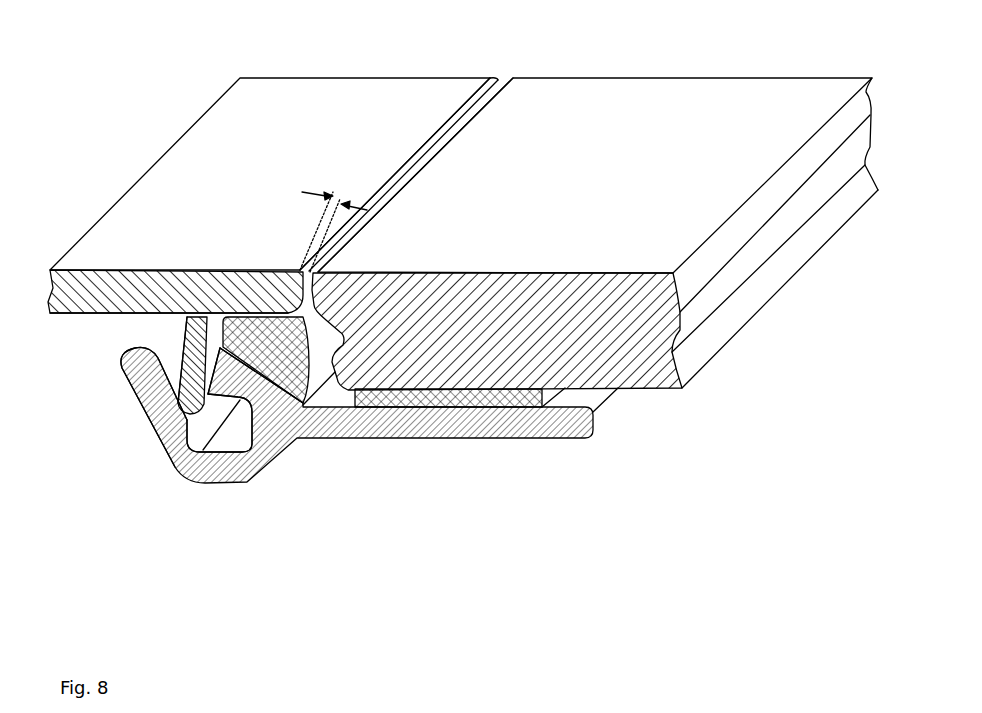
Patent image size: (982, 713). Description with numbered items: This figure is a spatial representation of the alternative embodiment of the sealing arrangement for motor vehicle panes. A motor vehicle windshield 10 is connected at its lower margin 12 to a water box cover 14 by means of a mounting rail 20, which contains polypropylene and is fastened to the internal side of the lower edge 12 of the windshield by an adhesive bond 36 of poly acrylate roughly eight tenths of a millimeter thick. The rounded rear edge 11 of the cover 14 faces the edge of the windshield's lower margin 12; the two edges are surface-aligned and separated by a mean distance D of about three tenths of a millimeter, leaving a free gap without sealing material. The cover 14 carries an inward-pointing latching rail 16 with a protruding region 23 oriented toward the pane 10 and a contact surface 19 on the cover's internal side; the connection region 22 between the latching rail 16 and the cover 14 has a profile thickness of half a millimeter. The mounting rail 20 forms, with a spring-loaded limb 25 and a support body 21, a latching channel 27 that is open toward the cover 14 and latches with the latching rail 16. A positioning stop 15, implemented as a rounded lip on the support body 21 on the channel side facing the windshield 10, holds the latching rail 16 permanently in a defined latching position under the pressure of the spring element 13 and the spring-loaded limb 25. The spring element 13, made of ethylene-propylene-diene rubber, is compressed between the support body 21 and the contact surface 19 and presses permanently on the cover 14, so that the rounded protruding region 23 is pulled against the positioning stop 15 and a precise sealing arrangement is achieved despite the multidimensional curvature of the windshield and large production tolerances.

The motor vehicle windshield 10 is at (587, 140).
The rear edge 11 is at (423, 137).
The lower margin 12 is at (498, 115).
The spring element 13 is at (277, 352).
The water box cover 14 is at (222, 160).
The positioning stop 15 is at (209, 394).
The latching rail 16 is at (188, 353).
The contact surface 19 is at (250, 311).
The mounting rail 20 is at (360, 442).
The support body 21 is at (257, 390).
The connection region 22 is at (190, 313).
The protruding region 23 is at (242, 440).
The spring-loaded limb 25 is at (152, 410).
The latching channel 27 is at (205, 440).
The adhesive bond 36 is at (468, 403).
The mean distance D is at (333, 221).